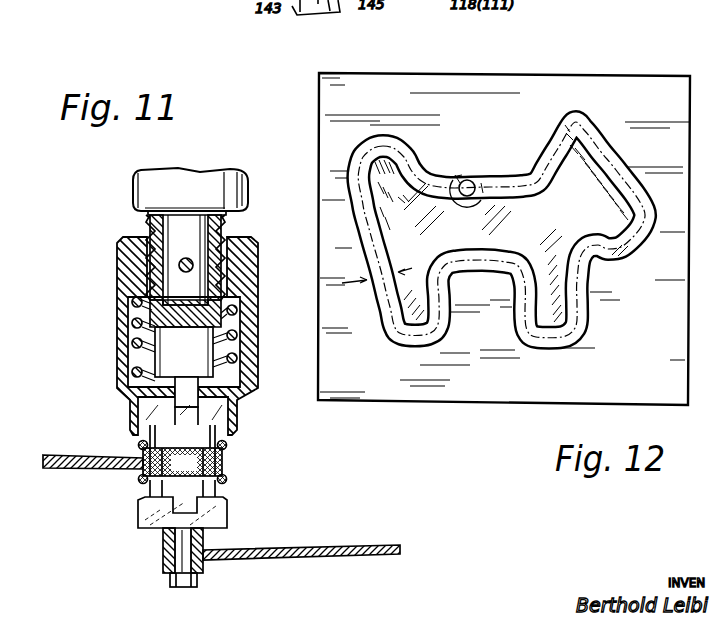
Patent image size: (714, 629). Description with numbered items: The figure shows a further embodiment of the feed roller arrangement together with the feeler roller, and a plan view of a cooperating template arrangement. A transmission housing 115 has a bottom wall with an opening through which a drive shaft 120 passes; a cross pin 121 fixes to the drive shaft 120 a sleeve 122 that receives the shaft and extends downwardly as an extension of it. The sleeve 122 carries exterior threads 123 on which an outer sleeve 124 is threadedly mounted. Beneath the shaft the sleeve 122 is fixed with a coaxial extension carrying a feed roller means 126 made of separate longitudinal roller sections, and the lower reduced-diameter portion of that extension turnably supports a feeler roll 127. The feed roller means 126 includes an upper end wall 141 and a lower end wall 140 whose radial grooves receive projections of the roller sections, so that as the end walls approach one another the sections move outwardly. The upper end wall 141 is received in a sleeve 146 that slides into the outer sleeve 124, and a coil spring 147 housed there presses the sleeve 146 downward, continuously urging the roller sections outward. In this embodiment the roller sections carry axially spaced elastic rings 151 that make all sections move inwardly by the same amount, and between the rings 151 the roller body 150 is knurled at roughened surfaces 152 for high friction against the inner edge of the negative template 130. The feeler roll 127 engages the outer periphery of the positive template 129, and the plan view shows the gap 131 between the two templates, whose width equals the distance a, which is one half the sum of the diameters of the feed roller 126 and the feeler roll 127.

In FIG. 11, the transmission housing 115 is at (249, 190).
In FIG. 11, the drive shaft 120 is at (212, 235).
In FIG. 11, the cross pin 121 is at (186, 258).
In FIG. 11, the sleeve 122 is at (150, 270).
In FIG. 11, the exterior threads 123 is at (150, 217).
In FIG. 11, the outer sleeve 124 is at (128, 334).
In FIG. 11, the coil spring 147 is at (237, 311).
In FIG. 11, the sleeve 146 is at (130, 417).
In FIG. 11, the upper end wall 141 is at (230, 413).
In FIG. 11, the roughened surfaces 152 is at (139, 446).
In FIG. 11, the elastic rings 151 is at (227, 445).
In FIG. 11, the knurled nut 150 is at (182, 462).
In FIG. 11, the negative template 130 is at (65, 470).
In FIG. 12, the negative template 130 is at (405, 401).
In FIG. 11, the lower end wall 140 is at (228, 519).
In FIG. 11, the feeler roll 127 is at (204, 574).
In FIG. 12, the feeler roll 127 is at (472, 179).
In FIG. 11, the positive template 129 is at (323, 548).
In FIG. 12, the positive template 129 is at (548, 270).
In FIG. 12, the feed roller means 126 is at (447, 164).
In FIG. 12, the gap 131 is at (423, 346).
In FIG. 12, the distance a is at (383, 274).